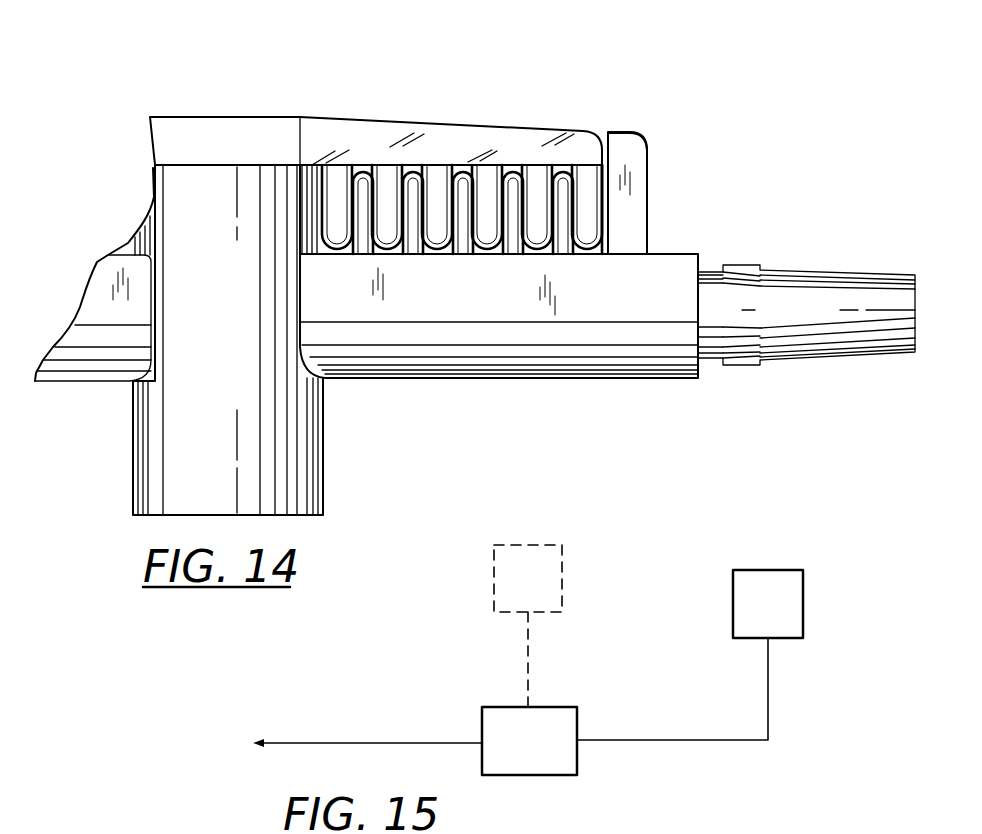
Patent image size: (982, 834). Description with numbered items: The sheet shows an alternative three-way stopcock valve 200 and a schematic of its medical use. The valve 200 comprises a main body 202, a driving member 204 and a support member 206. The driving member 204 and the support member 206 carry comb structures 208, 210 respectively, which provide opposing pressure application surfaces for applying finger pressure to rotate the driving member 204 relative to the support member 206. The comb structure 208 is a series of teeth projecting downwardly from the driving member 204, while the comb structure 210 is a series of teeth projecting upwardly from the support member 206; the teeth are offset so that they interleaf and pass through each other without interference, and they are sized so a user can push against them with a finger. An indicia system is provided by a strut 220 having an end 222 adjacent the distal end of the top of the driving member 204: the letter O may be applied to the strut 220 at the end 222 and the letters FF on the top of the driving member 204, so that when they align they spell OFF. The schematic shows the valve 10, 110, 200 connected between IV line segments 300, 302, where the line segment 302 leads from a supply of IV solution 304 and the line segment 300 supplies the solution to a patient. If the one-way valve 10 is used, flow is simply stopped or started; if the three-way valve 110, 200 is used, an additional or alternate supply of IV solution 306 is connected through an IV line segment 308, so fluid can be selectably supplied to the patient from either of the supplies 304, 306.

In FIG. 14, the valve 200 is at (663, 148).
In FIG. 15, the valve 200 is at (580, 760).
In FIG. 14, the main body 202 is at (323, 445).
In FIG. 14, the driving member 204 is at (363, 115).
In FIG. 14, the support member 206 is at (570, 380).
In FIG. 14, the comb structure 208 is at (541, 178).
In FIG. 14, the comb structure 210 is at (566, 248).
In FIG. 14, the strut 220 is at (630, 198).
In FIG. 14, the end of strut 222 is at (622, 131).
In FIG. 15, the IV line segment 300 is at (357, 743).
In FIG. 15, the IV line segment 302 is at (770, 700).
In FIG. 15, the supply of IV solution 304 is at (766, 570).
In FIG. 15, the additional or alternate supply of IV solution 306 is at (568, 565).
In FIG. 15, the IV line segment 308 is at (538, 660).
In FIG. 15, the one-way valve 10 is at (620, 746).
In FIG. 15, the three-way valve 110 is at (620, 746).